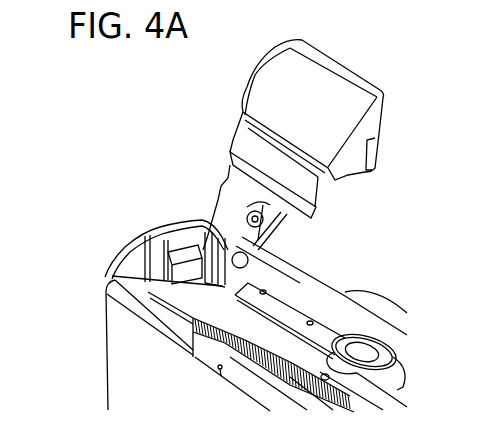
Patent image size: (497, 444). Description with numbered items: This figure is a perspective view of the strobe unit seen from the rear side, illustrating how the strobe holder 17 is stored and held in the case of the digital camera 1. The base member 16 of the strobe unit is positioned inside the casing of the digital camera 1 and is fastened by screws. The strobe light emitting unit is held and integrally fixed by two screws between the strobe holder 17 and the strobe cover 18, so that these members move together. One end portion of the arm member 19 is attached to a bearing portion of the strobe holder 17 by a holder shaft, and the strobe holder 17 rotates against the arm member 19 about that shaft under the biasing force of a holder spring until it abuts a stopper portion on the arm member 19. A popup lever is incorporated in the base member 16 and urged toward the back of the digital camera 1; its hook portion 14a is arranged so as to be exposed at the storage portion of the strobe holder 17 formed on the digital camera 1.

The digital camera 1 is at (106, 349).
The hook portion 14a is at (153, 232).
The base member 16 is at (108, 291).
The strobe holder 17 is at (378, 143).
The strobe cover 18 is at (250, 80).
The arm member 19 is at (277, 231).